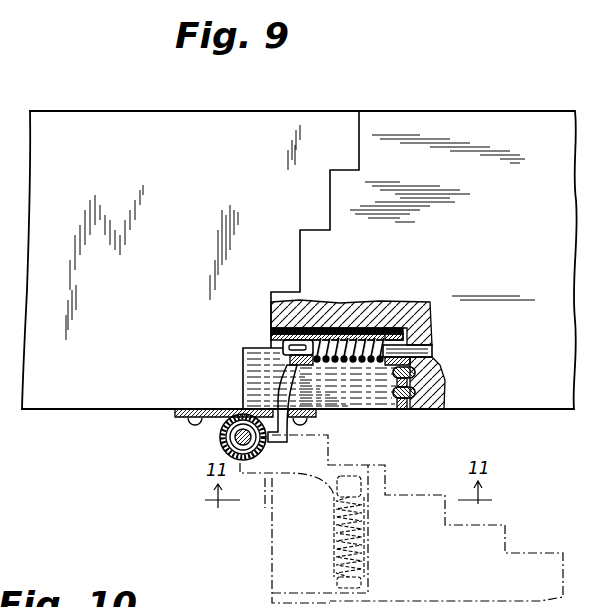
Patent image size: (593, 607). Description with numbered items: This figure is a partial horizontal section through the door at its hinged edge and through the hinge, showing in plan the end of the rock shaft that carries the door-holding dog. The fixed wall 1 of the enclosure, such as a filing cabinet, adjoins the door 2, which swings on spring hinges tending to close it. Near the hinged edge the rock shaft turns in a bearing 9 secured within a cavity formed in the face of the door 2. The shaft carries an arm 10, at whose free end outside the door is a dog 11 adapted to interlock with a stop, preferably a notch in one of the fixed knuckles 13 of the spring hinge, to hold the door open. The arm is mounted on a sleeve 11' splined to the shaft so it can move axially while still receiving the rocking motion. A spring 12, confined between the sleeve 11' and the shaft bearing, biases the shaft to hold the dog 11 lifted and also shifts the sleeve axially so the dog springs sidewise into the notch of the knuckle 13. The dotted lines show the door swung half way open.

The fixed wall 1 is at (212, 229).
The door 2 is at (403, 272).
The bearing 9 is at (432, 355).
The arm 10 is at (243, 381).
The dog 11 is at (293, 414).
The sleeve 11' is at (310, 318).
The spring 12 is at (361, 362).
The fixed knuckle 13 is at (221, 437).